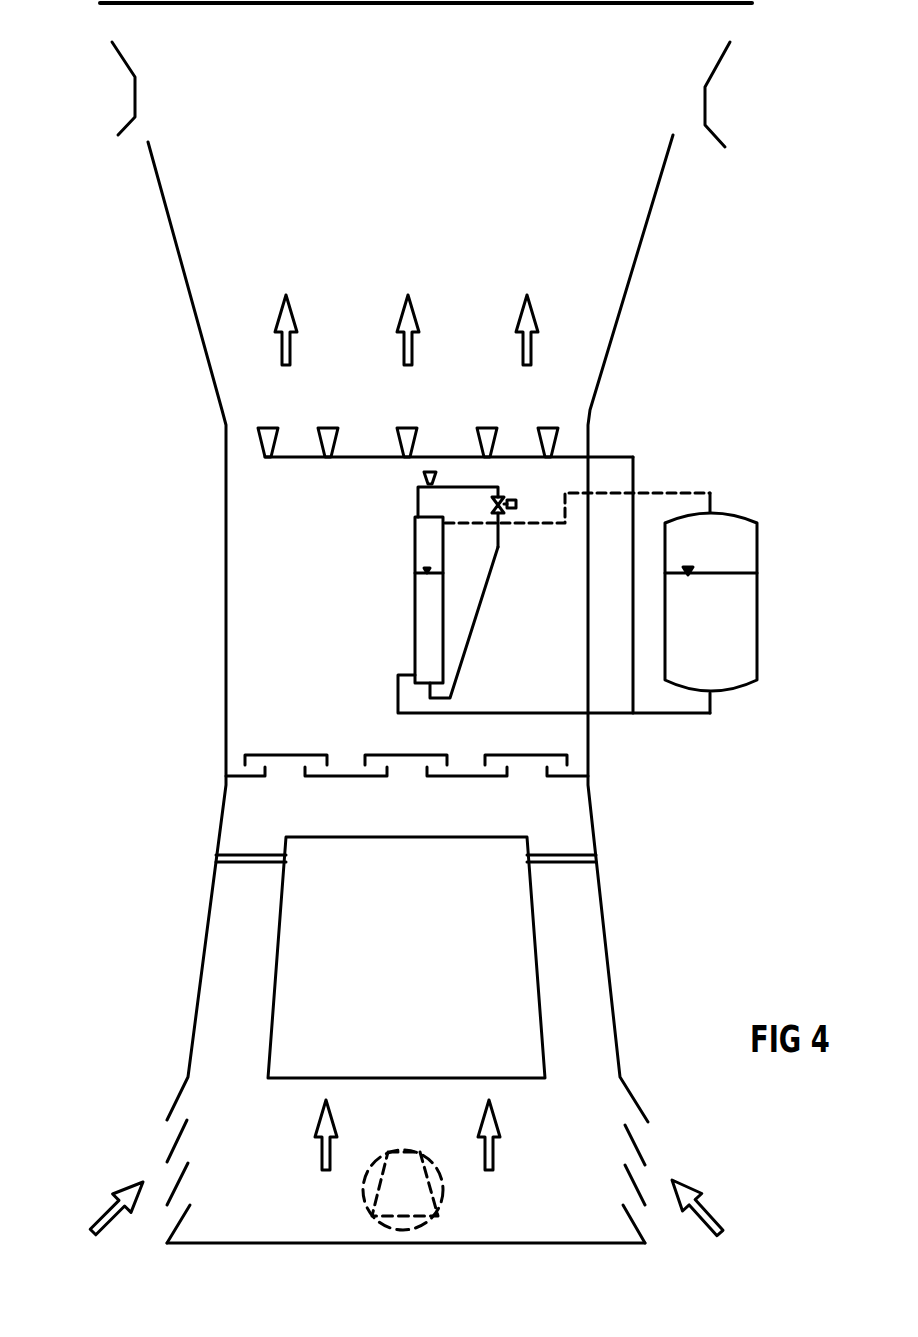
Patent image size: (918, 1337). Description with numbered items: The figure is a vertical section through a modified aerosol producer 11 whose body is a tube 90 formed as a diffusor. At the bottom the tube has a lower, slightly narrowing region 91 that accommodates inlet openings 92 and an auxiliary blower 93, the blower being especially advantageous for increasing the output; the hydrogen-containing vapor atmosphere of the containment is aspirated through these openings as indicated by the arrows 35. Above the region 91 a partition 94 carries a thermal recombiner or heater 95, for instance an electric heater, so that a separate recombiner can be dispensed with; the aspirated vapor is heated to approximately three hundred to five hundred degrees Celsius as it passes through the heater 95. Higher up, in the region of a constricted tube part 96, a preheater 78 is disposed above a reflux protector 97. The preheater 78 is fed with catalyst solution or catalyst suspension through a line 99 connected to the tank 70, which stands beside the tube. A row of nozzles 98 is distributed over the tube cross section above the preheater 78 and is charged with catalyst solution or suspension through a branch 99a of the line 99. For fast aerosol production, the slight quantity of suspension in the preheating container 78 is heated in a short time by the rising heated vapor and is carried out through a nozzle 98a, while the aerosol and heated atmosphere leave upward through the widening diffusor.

The aerosol producer 11 is at (696, 273).
The tube 90 is at (184, 272).
The constricted tube part 96 is at (226, 612).
The nozzles 98 is at (548, 426).
The nozzle 98a is at (427, 477).
The branch 99a is at (633, 470).
The preheater 78 is at (415, 615).
The tank 70 is at (757, 618).
The line 99 is at (633, 713).
The reflux protector 97 is at (588, 765).
The partition 94 is at (580, 853).
The thermal recombiner or heater 95 is at (512, 946).
The lower slightly narrowing region 91 is at (582, 1029).
The inlet openings 92 is at (640, 1148).
The auxiliary blower 93 is at (445, 1195).
The arrows 35 is at (718, 1216).